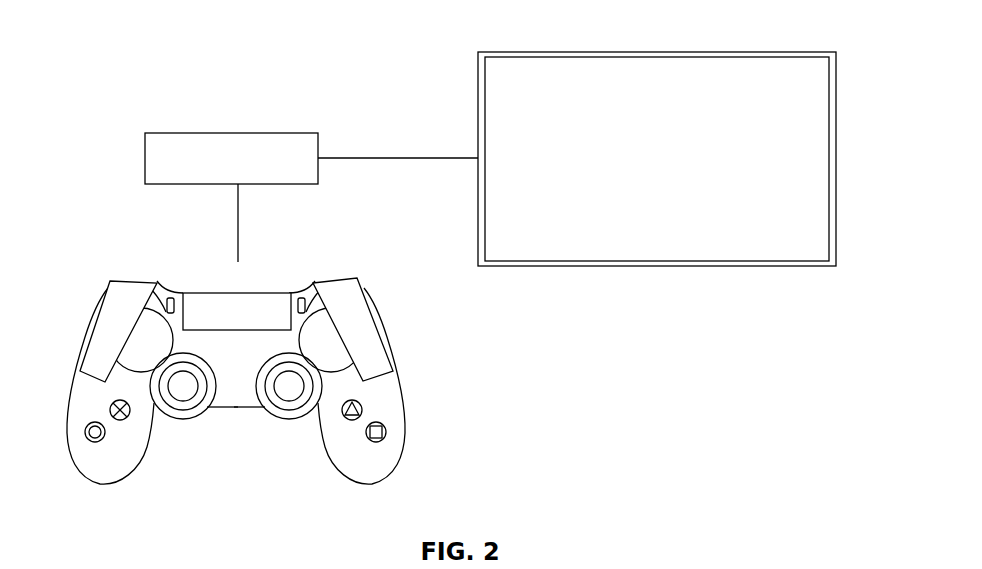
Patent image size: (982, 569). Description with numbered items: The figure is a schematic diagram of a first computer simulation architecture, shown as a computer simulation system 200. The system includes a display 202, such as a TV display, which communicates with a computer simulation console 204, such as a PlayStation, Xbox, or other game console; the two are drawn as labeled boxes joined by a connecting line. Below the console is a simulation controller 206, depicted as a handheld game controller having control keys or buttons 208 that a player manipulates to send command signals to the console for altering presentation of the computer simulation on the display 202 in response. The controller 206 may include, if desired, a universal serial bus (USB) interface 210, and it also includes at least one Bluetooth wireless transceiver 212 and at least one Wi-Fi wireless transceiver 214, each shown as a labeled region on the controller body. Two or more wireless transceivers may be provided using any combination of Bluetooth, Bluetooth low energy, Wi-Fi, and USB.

The computer simulation system 200 is at (102, 110).
The display 202 is at (800, 52).
The computer simulation console 204 is at (256, 132).
The simulation controller 206 is at (255, 357).
The control keys or buttons 208 is at (387, 430).
The universal serial bus (USB) interface 210 is at (382, 352).
The Bluetooth wireless transceiver 212 is at (102, 312).
The Wi-Fi wireless transceiver 214 is at (195, 297).